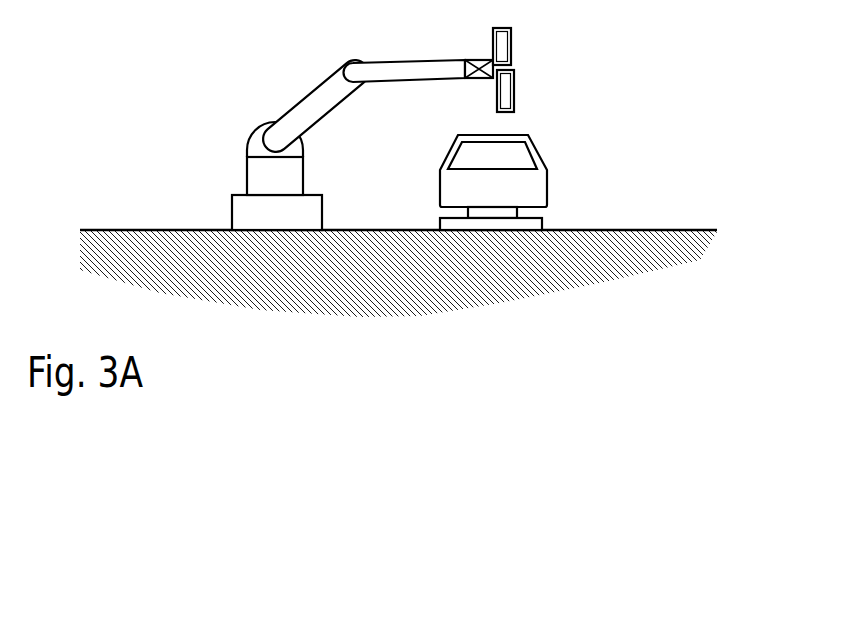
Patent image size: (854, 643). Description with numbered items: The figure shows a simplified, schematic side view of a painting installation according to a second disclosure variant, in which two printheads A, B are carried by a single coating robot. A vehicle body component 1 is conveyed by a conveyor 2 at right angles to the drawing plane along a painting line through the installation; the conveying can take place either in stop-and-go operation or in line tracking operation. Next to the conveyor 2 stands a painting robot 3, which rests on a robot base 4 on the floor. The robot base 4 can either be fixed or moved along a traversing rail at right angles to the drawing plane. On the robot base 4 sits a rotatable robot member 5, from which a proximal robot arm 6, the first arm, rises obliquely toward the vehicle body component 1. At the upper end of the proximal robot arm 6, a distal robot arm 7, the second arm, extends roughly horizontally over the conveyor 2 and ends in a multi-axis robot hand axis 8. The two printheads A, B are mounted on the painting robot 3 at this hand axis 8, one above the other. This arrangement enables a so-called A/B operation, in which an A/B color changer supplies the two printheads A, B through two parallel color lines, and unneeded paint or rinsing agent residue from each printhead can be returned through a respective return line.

The vehicle body component 1 is at (548, 183).
The conveyor 2 is at (440, 220).
The painting robot 3 is at (375, 119).
The robot base 4 is at (240, 212).
The rotatable robot member 5 is at (291, 178).
The proximal robot arm 6 is at (318, 100).
The distal robot arm 7 is at (420, 72).
The multi-axis robot hand axis 8 is at (478, 63).
The printhead A is at (512, 52).
The printhead B is at (514, 91).